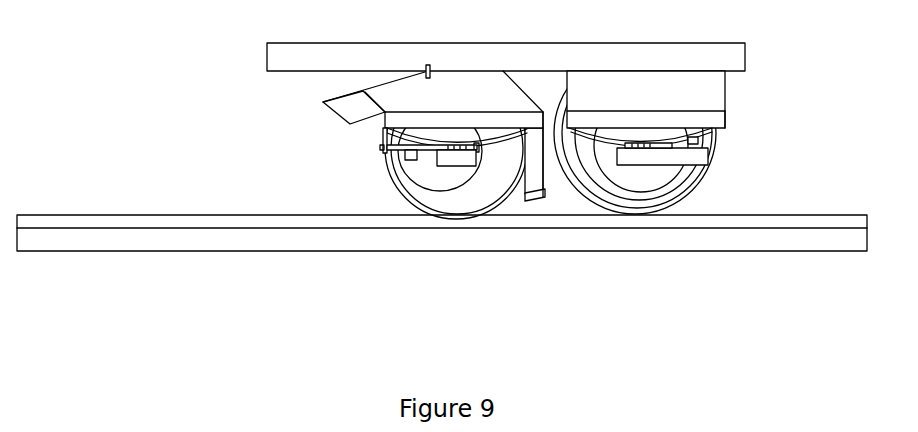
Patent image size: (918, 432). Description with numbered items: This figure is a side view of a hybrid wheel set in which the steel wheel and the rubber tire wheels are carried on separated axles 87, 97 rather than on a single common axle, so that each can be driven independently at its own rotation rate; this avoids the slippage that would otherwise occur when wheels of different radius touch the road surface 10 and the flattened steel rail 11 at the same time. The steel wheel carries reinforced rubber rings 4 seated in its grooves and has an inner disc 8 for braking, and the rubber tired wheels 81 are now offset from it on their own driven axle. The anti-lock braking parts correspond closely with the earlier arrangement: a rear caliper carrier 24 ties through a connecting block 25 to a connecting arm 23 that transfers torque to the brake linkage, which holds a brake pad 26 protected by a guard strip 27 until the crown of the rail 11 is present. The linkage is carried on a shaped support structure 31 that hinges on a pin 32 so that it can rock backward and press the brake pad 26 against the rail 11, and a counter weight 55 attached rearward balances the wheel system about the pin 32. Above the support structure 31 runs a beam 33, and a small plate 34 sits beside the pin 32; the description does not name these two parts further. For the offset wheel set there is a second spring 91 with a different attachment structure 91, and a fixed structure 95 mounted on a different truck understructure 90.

The rubber rings 4 is at (399, 172).
The inner disc 8 is at (467, 184).
The road surface 10 is at (237, 230).
The flattened steel rail 11 is at (133, 222).
The connecting arm 23 is at (402, 190).
The rear caliper carrier 24 is at (383, 128).
The connecting block 25 is at (383, 148).
The brake pad 26 is at (522, 200).
The guard strip 27 is at (543, 200).
The shaped support structure 31 is at (488, 78).
The pin 32 is at (426, 66).
The beam 33 is at (468, 67).
The mounting plate 34 is at (353, 105).
The counter weight 55 is at (392, 92).
The rubber tired wheels 81 is at (710, 175).
The separated axle 87 is at (474, 167).
The truck understructure 90 is at (600, 57).
The second spring 91 is at (726, 120).
The fixed structure 95 is at (703, 82).
The separated axle 97 is at (635, 147).